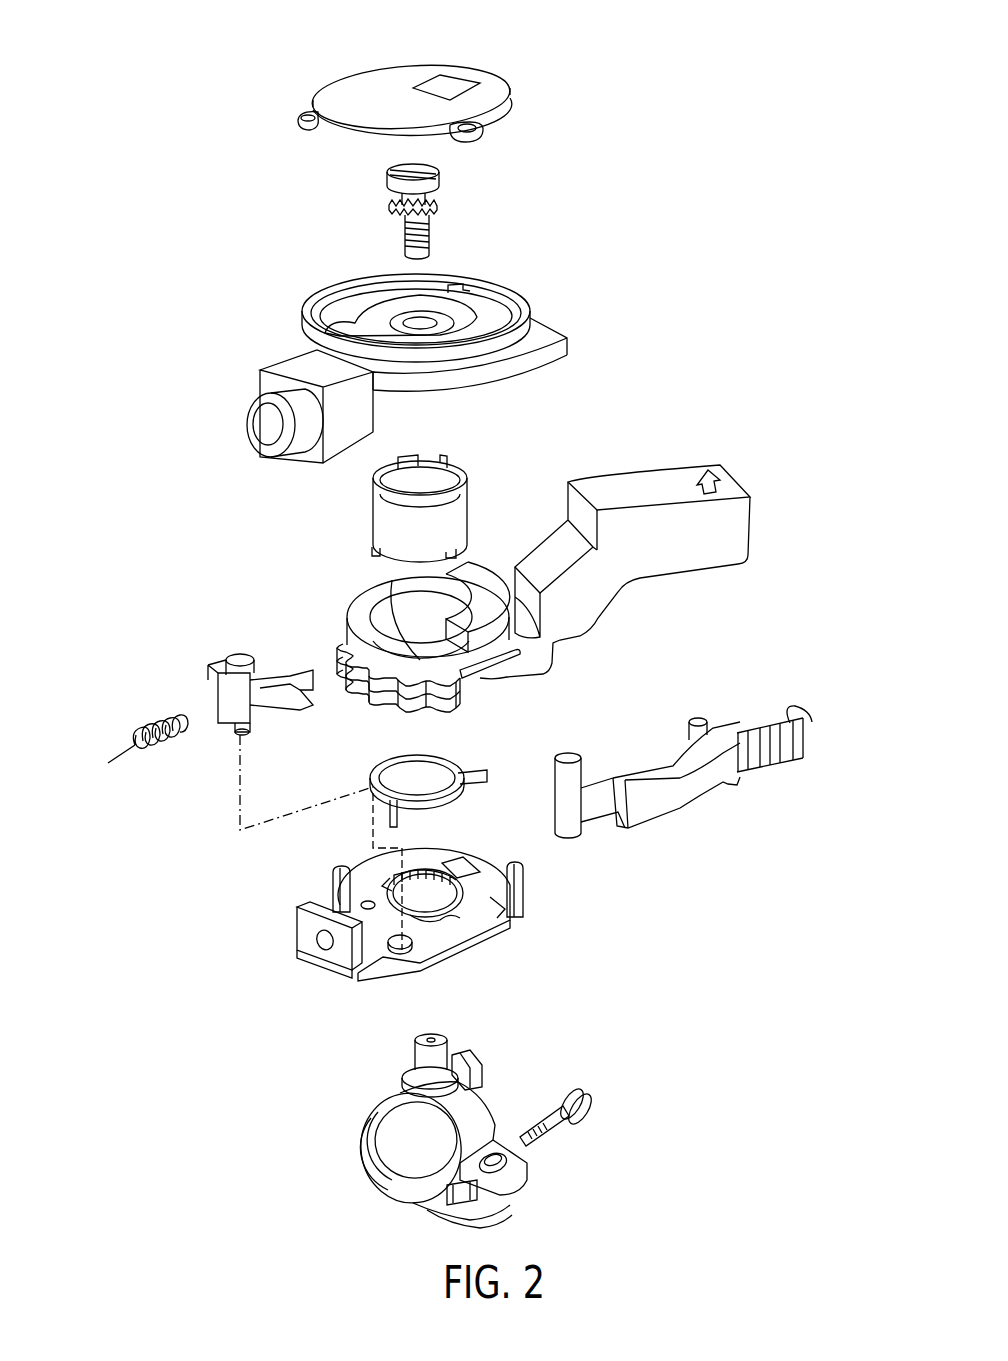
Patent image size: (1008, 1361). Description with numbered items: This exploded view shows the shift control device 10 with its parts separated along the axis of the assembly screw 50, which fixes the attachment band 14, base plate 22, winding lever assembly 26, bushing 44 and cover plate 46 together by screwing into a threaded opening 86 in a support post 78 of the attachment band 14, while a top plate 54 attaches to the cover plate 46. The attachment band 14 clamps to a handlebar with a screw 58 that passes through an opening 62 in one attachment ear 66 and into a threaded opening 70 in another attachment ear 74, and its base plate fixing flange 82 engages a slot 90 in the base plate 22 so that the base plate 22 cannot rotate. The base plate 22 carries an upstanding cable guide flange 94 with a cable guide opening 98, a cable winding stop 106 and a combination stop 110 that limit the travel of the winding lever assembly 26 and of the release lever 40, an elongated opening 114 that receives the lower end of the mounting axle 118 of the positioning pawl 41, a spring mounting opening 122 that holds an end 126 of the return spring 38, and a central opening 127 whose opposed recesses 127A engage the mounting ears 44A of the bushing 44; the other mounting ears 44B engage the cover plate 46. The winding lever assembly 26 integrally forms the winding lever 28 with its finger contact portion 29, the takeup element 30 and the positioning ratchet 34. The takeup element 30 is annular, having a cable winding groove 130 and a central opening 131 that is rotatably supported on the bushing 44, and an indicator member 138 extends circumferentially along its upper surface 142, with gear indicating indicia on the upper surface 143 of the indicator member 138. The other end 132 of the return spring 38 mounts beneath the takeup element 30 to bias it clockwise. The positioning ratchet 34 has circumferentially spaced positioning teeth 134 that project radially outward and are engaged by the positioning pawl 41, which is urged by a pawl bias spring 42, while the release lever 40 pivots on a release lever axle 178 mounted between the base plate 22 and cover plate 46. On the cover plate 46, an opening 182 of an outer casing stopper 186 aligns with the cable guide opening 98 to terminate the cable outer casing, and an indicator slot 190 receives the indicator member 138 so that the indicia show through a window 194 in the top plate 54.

The shift control device 10 is at (636, 84).
The attachment band 14 is at (441, 1144).
The base plate 22 is at (425, 927).
The winding lever assembly 26 is at (657, 543).
The winding lever 28 is at (652, 468).
The finger contact portion 29 is at (718, 560).
The takeup element 30 is at (438, 641).
The positioning ratchet 34 is at (369, 687).
The return spring 38 is at (457, 792).
The release lever 40 is at (706, 781).
The positioning pawl 41 is at (221, 716).
The pawl bias spring 42 is at (128, 748).
The bushing 44 is at (419, 485).
The mounting ears 44A is at (470, 525).
The mounting ears 44B is at (470, 466).
The cover plate 46 is at (382, 343).
The assembly screw 50 is at (388, 190).
The top plate 54 is at (405, 83).
The screw 58 is at (590, 1107).
The opening 62 is at (508, 1165).
The attachment ear 66 is at (522, 1184).
The threaded opening 70 is at (440, 1205).
The attachment ear 74 is at (500, 1212).
The support post 78 is at (412, 1052).
The base plate fixing flange 82 is at (482, 1066).
The threaded opening 86 is at (432, 1036).
The slot 90 is at (470, 868).
The cable guide flange 94 is at (306, 968).
The cable guide opening 98 is at (300, 928).
The cable winding stop 106 is at (330, 878).
The combination stop 110 is at (526, 892).
The elongated opening 114 is at (400, 952).
The mounting axle 118 is at (236, 738).
The spring mounting opening 122 is at (360, 905).
The end 126 is at (400, 816).
The central opening 127 is at (437, 912).
The opposed recesses 127A is at (386, 874).
The cable winding groove 130 is at (474, 690).
The central opening 131 is at (380, 614).
The end 132 is at (490, 771).
The positioning teeth 134 is at (356, 700).
The indicator member 138 is at (488, 584).
The upper surface 142 is at (412, 628).
The upper surface 143 is at (530, 604).
The release lever axle 178 is at (588, 822).
The opening 182 is at (262, 424).
The outer casing stopper 186 is at (285, 386).
The indicator slot 190 is at (510, 300).
The window 194 is at (448, 78).